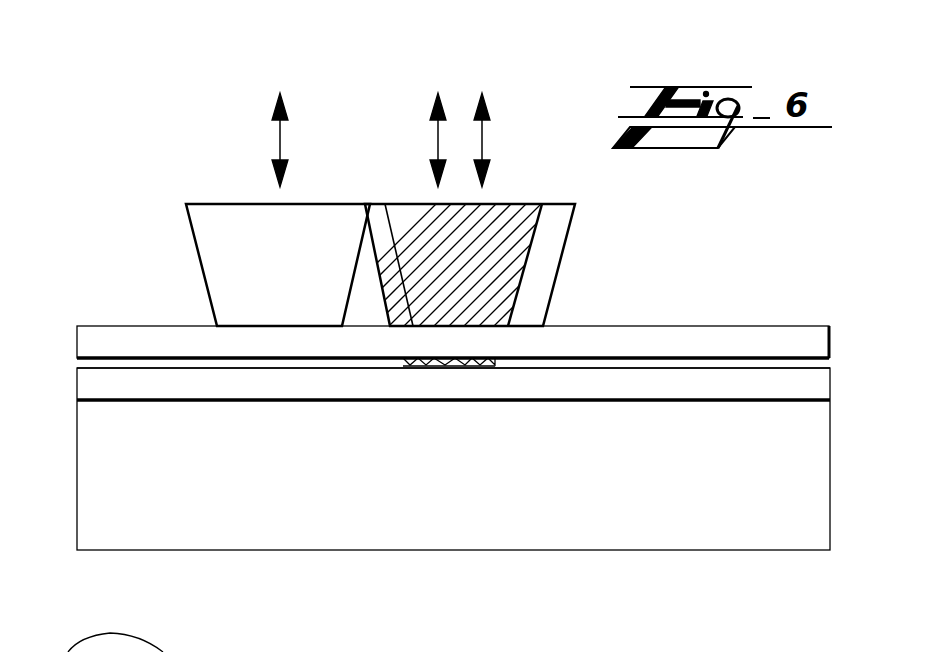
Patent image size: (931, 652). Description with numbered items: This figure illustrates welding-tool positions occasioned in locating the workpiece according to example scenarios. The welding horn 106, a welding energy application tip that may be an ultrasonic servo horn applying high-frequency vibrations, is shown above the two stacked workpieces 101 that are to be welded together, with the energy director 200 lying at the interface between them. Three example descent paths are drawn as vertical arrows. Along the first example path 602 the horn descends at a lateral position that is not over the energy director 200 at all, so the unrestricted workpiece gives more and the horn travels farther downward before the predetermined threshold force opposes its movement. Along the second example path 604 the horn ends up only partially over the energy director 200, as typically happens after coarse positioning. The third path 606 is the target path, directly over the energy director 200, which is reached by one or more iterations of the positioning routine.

The horn 106 is at (194, 237).
The workpieces 101 is at (685, 287).
The first example path 602 is at (280, 142).
The second example path 604 is at (482, 130).
The third example path 606 is at (438, 140).
The energy director 200 is at (407, 384).